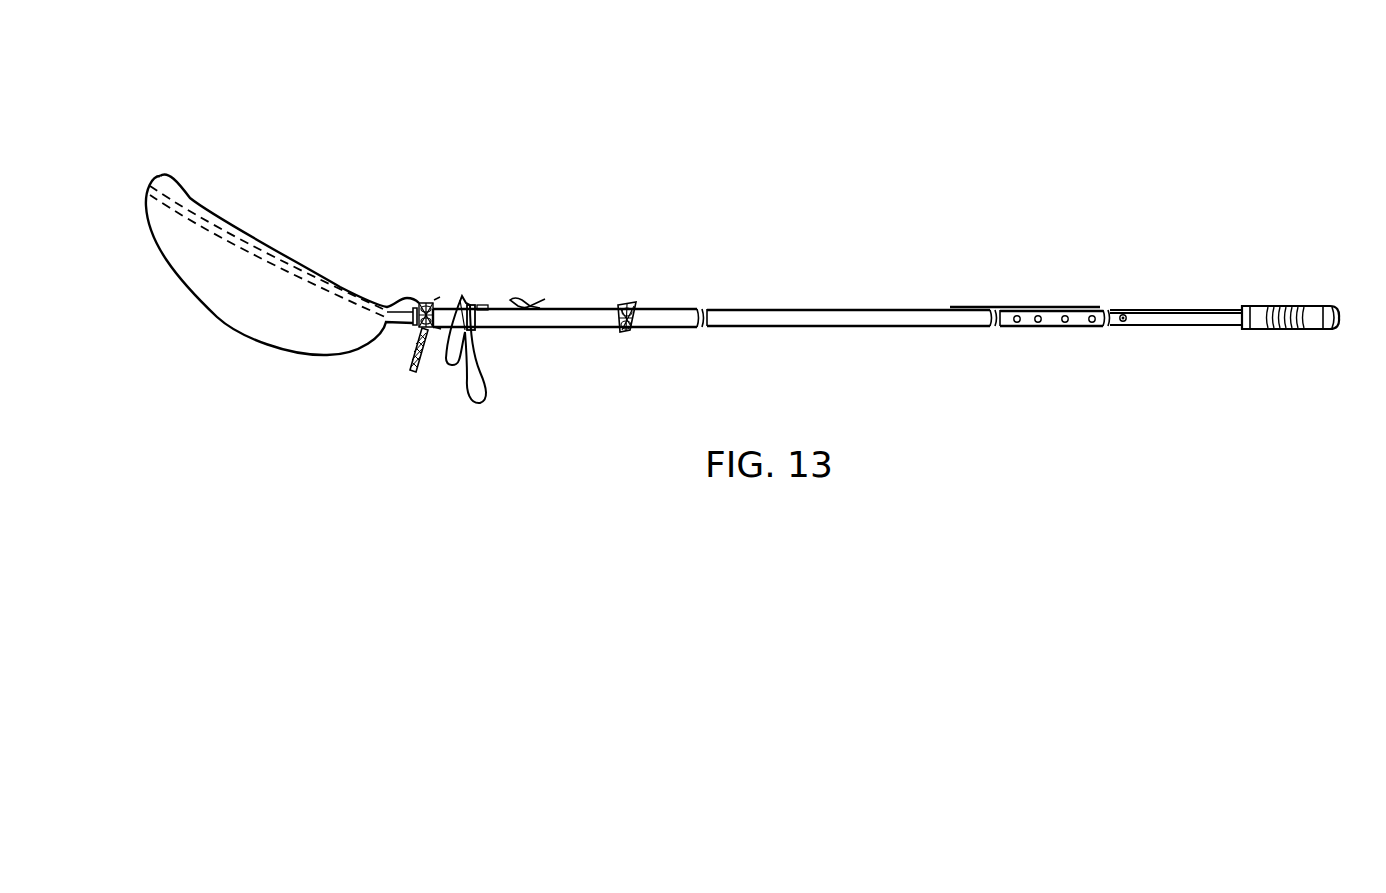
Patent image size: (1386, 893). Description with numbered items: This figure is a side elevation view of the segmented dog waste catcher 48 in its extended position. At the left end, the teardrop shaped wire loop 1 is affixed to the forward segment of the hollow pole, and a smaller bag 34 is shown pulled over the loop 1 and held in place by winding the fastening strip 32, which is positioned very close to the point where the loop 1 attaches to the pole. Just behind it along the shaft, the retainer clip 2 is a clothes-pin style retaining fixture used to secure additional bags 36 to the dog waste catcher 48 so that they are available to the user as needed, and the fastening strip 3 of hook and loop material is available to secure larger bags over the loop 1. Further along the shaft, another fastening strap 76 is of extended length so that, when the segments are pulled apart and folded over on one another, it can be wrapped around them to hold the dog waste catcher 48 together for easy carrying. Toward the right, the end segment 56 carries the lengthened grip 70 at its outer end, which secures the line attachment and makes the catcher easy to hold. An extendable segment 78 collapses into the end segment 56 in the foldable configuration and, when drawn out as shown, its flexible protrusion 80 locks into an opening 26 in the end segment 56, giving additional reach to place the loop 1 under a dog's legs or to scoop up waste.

The teardrop shaped wire loop 1 is at (283, 260).
The retainer clip 2 is at (475, 295).
The fastening strip 3 is at (530, 303).
The opening 26 is at (1068, 315).
The fastening strip 32 is at (413, 372).
The smaller bag 34 is at (235, 343).
The additional bags 36 is at (470, 368).
The dog waste catcher 48 is at (797, 233).
The end segment 56 is at (1007, 327).
The lengthened grip 70 is at (1292, 306).
The fastening strap 76 is at (620, 334).
The extendable segment 78 is at (1185, 320).
The flexible protrusion 80 is at (1125, 322).